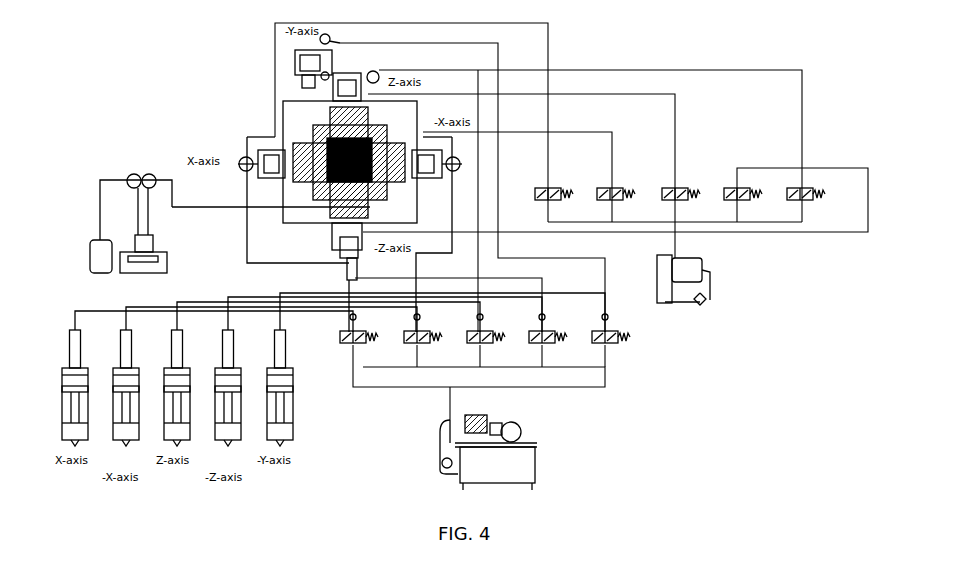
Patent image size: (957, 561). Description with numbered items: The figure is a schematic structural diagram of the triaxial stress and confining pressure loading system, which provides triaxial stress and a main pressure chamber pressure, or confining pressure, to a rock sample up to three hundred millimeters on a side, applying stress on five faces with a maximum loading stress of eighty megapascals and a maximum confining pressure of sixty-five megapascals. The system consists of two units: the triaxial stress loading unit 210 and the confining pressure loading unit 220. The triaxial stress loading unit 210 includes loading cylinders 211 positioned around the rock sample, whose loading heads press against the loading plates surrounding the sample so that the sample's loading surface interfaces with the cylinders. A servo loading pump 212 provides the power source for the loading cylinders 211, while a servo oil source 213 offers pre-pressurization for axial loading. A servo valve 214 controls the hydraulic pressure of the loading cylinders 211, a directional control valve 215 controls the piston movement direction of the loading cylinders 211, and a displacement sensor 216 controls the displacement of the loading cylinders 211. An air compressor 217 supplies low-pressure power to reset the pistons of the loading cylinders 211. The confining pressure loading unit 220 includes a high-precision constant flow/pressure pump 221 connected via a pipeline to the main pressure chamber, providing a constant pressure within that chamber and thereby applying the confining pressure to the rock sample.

The triaxial stress loading unit 210 is at (253, 132).
The loading cylinders 211 is at (290, 55).
The servo loading pump 212 is at (83, 362).
The servo oil source 213 is at (553, 448).
The servo valve 214 is at (342, 344).
The directional control valve 215 is at (338, 43).
The displacement sensor 216 is at (293, 75).
The air compressor 217 is at (732, 288).
The confining pressure loading unit 220 is at (117, 187).
The high-precision constant flow/pressure pump 221 is at (172, 262).